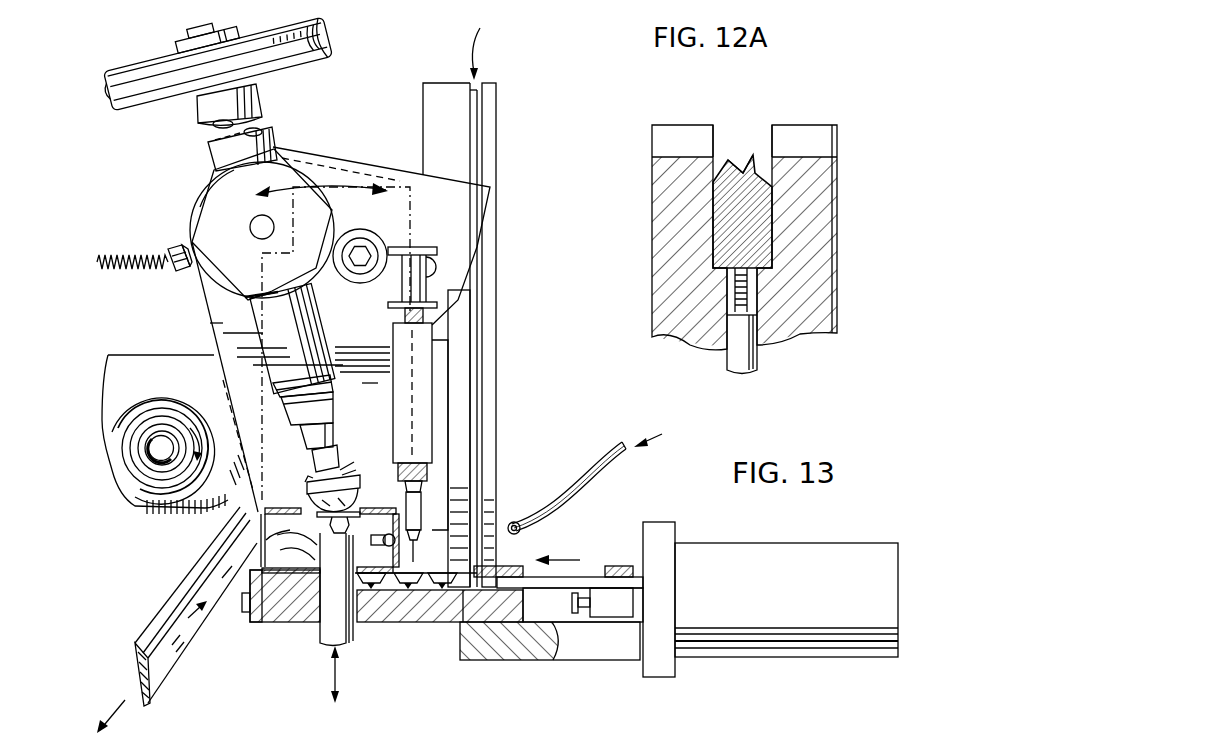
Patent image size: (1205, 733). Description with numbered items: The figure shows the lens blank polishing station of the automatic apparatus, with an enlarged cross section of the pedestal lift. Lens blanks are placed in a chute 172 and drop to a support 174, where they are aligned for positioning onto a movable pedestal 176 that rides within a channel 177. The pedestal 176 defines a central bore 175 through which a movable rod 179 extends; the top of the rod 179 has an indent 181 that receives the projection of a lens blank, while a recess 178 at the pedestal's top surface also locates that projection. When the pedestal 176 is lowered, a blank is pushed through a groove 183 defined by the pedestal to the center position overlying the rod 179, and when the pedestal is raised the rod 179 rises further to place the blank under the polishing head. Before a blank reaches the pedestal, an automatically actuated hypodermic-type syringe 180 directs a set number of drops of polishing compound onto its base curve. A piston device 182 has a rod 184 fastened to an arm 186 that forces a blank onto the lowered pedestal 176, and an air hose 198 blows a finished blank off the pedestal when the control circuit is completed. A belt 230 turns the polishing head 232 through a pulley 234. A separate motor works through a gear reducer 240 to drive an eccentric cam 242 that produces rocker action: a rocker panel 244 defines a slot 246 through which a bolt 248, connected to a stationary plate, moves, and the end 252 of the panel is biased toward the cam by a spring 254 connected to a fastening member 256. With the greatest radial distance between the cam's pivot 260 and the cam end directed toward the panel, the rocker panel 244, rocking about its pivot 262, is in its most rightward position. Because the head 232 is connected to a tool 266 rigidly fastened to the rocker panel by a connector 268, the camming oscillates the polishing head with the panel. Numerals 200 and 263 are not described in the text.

In FIG. 13, the chute 172 is at (485, 135).
In FIG. 13, the support 174 is at (420, 590).
In FIG. 12A, the central bore 175 is at (752, 335).
In FIG. 13, the movable pedestal 176 is at (333, 605).
In FIG. 12A, the movable pedestal 176 is at (820, 287).
In FIG. 13, the channel 177 is at (352, 622).
In FIG. 12A, the recess 178 is at (727, 145).
In FIG. 12A, the movable rod 179 is at (753, 230).
In FIG. 13, the hypodermic-type syringe 180 is at (430, 390).
In FIG. 12A, the indent 181 is at (752, 150).
In FIG. 13, the piston device 182 is at (780, 573).
In FIG. 12A, the groove 183 is at (660, 137).
In FIG. 13, the rod 184 is at (636, 578).
In FIG. 13, the arm 186 is at (573, 583).
In FIG. 13, the air hose 198 is at (383, 525).
In FIG. 13, the base block 200 is at (513, 585).
In FIG. 13, the belt 230 is at (325, 22).
In FIG. 13, the polishing head 232 is at (342, 490).
In FIG. 13, the pulley 234 is at (298, 72).
In FIG. 13, the gear reducer 240 is at (133, 383).
In FIG. 13, the eccentric cam 242 is at (187, 470).
In FIG. 13, the rocker panel 244 is at (388, 178).
In FIG. 13, the slot 246 is at (430, 276).
In FIG. 13, the bolt 248 is at (375, 240).
In FIG. 13, the end of rocker panel 252 is at (213, 356).
In FIG. 13, the spring 254 is at (117, 252).
In FIG. 13, the fastening member 256 is at (176, 250).
In FIG. 13, the pivot 260 is at (158, 450).
In FIG. 13, the pivot 262 is at (305, 500).
In FIG. 13, the chute 263 is at (208, 620).
In FIG. 13, the tool 266 is at (305, 332).
In FIG. 13, the connector 268 is at (285, 165).